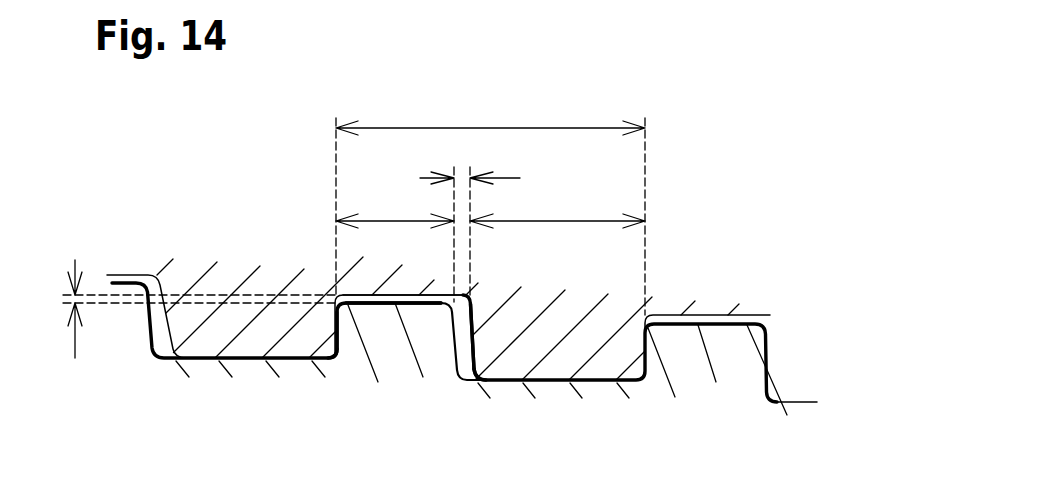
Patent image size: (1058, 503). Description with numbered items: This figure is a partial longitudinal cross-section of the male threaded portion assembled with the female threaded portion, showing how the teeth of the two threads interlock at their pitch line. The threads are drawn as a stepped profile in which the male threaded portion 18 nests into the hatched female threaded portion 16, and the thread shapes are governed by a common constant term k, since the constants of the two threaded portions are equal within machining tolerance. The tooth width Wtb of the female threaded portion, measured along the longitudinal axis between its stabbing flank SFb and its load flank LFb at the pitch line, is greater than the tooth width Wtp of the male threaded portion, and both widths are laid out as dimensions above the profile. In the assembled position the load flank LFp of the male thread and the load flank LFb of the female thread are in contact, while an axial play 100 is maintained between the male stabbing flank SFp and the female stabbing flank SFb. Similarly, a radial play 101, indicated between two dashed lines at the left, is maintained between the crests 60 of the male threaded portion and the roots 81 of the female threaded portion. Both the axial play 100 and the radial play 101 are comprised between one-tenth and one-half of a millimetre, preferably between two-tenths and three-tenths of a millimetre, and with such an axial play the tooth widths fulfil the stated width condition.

The first member (hatched body above sheet) 16 is at (716, 282).
The corrugated sheet 18 is at (726, 387).
The crest of the male threaded portion 60 is at (447, 290).
The root of the female threaded portion 81 is at (375, 293).
The axial play 100 is at (502, 177).
The radial play 101 is at (75, 340).
The constant term k is at (490, 210).
The tooth width of the male threaded portion Wtp is at (395, 210).
The tooth width of the female threaded portion Wtb is at (557, 210).
The load flank of the male threaded portion LFp is at (334, 335).
The load flank of the female threaded portion LFb is at (339, 341).
The stabbing flank of the male threaded portion SFp is at (506, 338).
The stabbing flank of the female threaded portion SFb is at (457, 335).